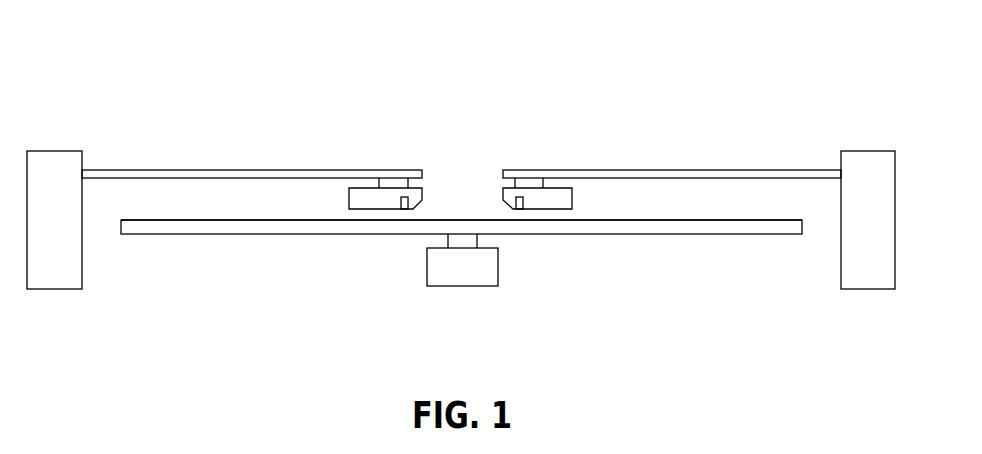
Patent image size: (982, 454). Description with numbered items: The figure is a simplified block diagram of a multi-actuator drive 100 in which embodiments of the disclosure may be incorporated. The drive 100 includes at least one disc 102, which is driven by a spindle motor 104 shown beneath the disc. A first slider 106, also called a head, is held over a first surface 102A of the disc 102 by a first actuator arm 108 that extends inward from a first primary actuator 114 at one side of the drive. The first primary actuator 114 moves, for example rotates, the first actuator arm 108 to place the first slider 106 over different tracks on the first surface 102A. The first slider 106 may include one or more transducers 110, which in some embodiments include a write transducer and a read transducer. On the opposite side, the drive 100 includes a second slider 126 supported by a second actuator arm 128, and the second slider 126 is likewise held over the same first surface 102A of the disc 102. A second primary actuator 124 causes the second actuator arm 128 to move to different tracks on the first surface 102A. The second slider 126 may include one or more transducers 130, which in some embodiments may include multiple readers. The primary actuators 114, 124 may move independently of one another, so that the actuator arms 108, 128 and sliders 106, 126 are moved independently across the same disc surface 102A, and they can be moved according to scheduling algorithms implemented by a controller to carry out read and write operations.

The multi-actuator drive 100 is at (736, 68).
The disc 102 is at (697, 227).
The first surface of the disc 102A is at (178, 220).
The spindle motor 104 is at (472, 272).
The first slider 106 is at (357, 199).
The first actuator arm 108 is at (203, 170).
The transducers 110 is at (398, 203).
The first primary actuator 114 is at (50, 162).
The second primary actuator 124 is at (865, 165).
The second slider 126 is at (569, 203).
The second actuator arm 128 is at (680, 170).
The transducers 130 is at (525, 205).